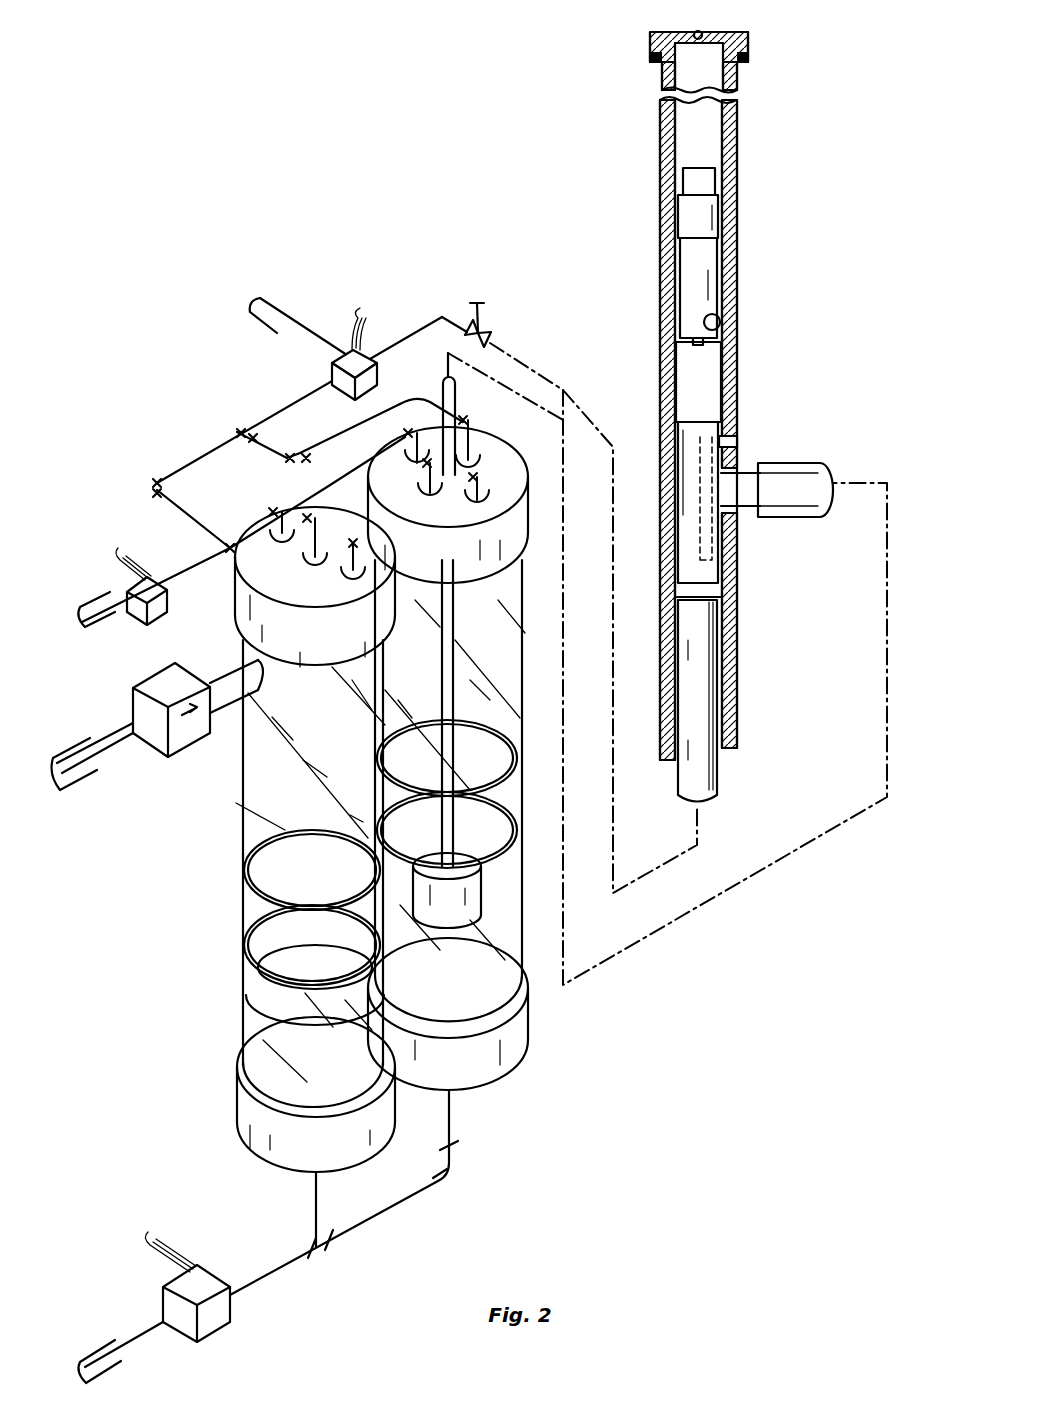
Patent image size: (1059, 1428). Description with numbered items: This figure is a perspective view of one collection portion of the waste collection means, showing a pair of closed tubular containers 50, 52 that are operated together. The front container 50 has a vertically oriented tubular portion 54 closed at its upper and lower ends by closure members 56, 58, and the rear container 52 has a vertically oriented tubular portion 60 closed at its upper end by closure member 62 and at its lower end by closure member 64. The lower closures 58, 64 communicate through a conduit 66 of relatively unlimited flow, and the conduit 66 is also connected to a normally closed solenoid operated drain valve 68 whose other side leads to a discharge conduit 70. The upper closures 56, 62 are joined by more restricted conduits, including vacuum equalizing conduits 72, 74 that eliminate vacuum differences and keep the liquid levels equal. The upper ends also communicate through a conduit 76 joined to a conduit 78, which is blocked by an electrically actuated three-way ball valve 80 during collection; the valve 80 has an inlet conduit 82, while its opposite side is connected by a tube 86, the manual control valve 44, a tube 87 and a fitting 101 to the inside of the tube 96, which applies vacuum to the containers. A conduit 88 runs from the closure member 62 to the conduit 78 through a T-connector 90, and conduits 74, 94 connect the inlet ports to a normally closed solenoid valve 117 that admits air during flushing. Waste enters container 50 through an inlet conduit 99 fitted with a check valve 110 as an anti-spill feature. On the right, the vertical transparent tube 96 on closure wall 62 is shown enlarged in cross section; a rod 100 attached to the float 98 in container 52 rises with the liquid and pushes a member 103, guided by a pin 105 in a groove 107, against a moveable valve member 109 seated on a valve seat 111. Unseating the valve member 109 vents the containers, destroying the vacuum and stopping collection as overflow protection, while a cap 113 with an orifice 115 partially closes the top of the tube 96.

The manual control valve 44 is at (490, 341).
The closed tubular container 50 is at (243, 803).
The closed tubular container 52 is at (525, 706).
The vertically oriented tubular portion 54 is at (252, 840).
The closure member 56 is at (248, 622).
The closure member 58 is at (255, 1115).
The vertically oriented tubular portion 60 is at (520, 760).
The closure member 62 is at (525, 560).
The closure member 64 is at (520, 1040).
The conduit 66 is at (377, 1213).
The solenoid operated drain valve 68 is at (217, 1315).
The discharge conduit 70 is at (140, 1338).
The vacuum equalizing conduit 72 is at (522, 535).
The vacuum equalizing conduit 74 is at (300, 500).
The conduit 76 is at (332, 486).
The conduit 78 is at (213, 448).
The electrically actuated three way ball valve 80 is at (334, 372).
The conduit 82 is at (290, 308).
The tube 86 is at (405, 339).
The tube 87 is at (812, 464).
The conduit 88 is at (368, 420).
The T-connector 90 is at (240, 432).
The conduit 94 is at (195, 562).
The tube 96 is at (457, 412).
The float 98 is at (478, 875).
The conduit 99 is at (242, 697).
The rod 100 is at (705, 783).
The fitting 101 is at (745, 470).
The member 103 is at (697, 568).
The pin 105 is at (725, 432).
The groove 107 is at (690, 450).
The moveable valve member 109 is at (705, 262).
The check valve 110 is at (135, 703).
The valve seat 111 is at (721, 321).
The cap 113 is at (652, 50).
The orifice 115 is at (703, 33).
The solenoid valve 117 is at (148, 590).